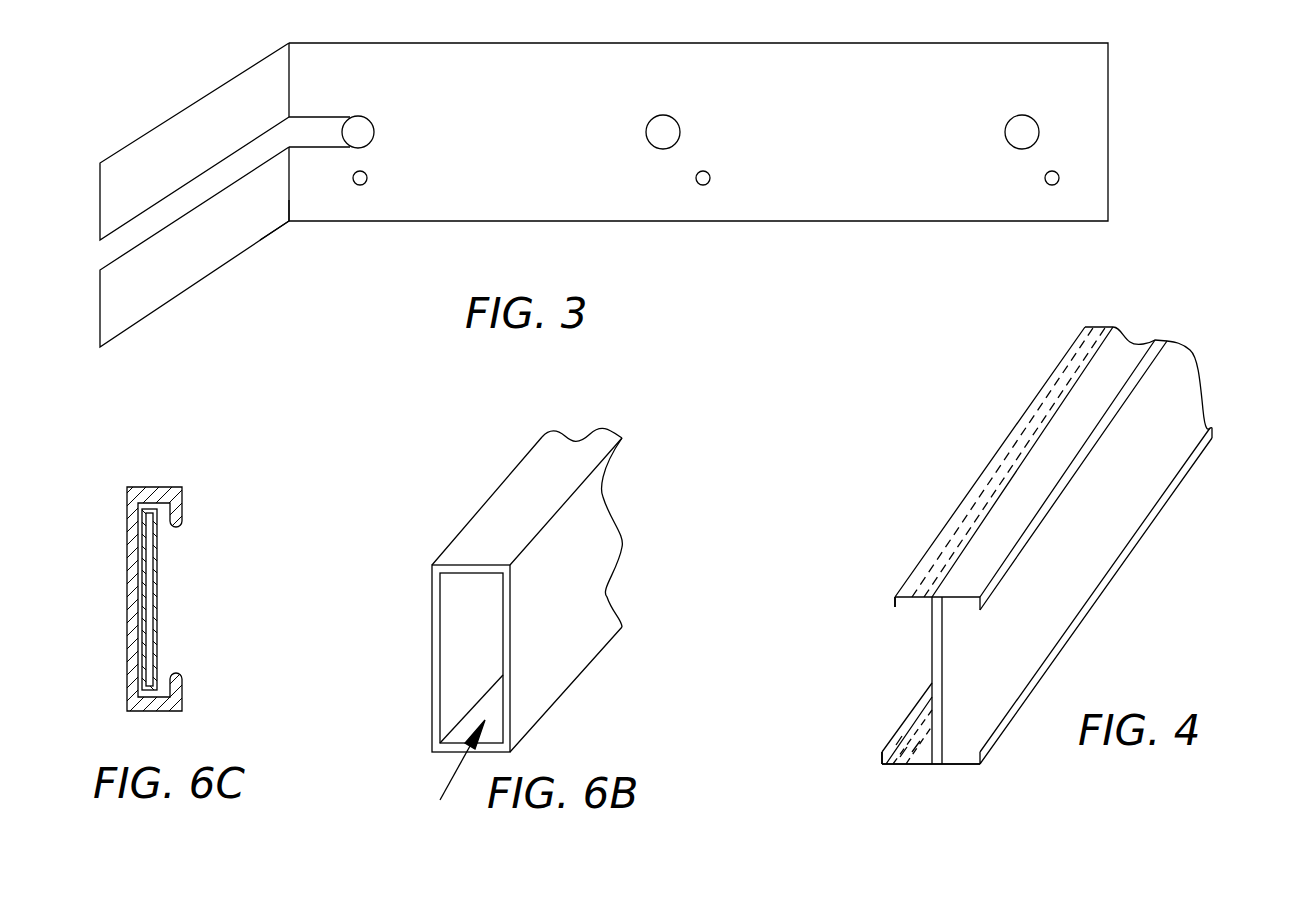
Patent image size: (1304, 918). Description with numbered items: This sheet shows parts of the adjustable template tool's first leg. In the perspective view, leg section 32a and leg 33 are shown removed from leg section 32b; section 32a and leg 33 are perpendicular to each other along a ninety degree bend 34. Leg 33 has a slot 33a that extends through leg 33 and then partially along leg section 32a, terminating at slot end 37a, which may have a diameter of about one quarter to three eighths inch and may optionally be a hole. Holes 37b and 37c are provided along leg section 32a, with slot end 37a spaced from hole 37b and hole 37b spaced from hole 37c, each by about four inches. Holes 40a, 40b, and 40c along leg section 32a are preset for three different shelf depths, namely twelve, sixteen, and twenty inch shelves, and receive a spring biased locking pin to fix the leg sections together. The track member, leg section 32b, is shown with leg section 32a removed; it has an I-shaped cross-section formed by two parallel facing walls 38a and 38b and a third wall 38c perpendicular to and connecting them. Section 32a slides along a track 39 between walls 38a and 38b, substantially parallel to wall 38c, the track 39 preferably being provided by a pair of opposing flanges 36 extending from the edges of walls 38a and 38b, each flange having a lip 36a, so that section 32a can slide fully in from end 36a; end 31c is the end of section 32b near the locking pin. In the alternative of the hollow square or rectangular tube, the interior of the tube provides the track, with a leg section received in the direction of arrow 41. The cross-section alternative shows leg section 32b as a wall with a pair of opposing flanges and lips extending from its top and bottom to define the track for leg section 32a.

In FIG. 4, the end of leg section 31c is at (920, 765).
In FIG. 3, the leg section 32a is at (375, 222).
In FIG. 6C, the leg section 32a is at (158, 607).
In FIG. 4, the leg section 32b is at (993, 564).
In FIG. 3, the leg 33 is at (108, 165).
In FIG. 3, the slot 33a is at (182, 186).
In FIG. 3, the bend 34 is at (289, 223).
In FIG. 4, the flanges 36 is at (890, 733).
In FIG. 4, the lip 36a is at (883, 753).
In FIG. 3, the slot end 37a is at (360, 116).
In FIG. 3, the hole 37b is at (668, 114).
In FIG. 3, the hole 37c is at (1027, 114).
In FIG. 4, the wall 38a is at (930, 548).
In FIG. 4, the wall 38b is at (900, 766).
In FIG. 4, the wall 38c is at (1025, 643).
In FIG. 4, the track 39 is at (910, 598).
In FIG. 3, the hole 40a is at (368, 178).
In FIG. 3, the hole 40b is at (711, 178).
In FIG. 3, the hole 40c is at (1060, 178).
In FIG. 6B, the arrow 41 is at (447, 782).